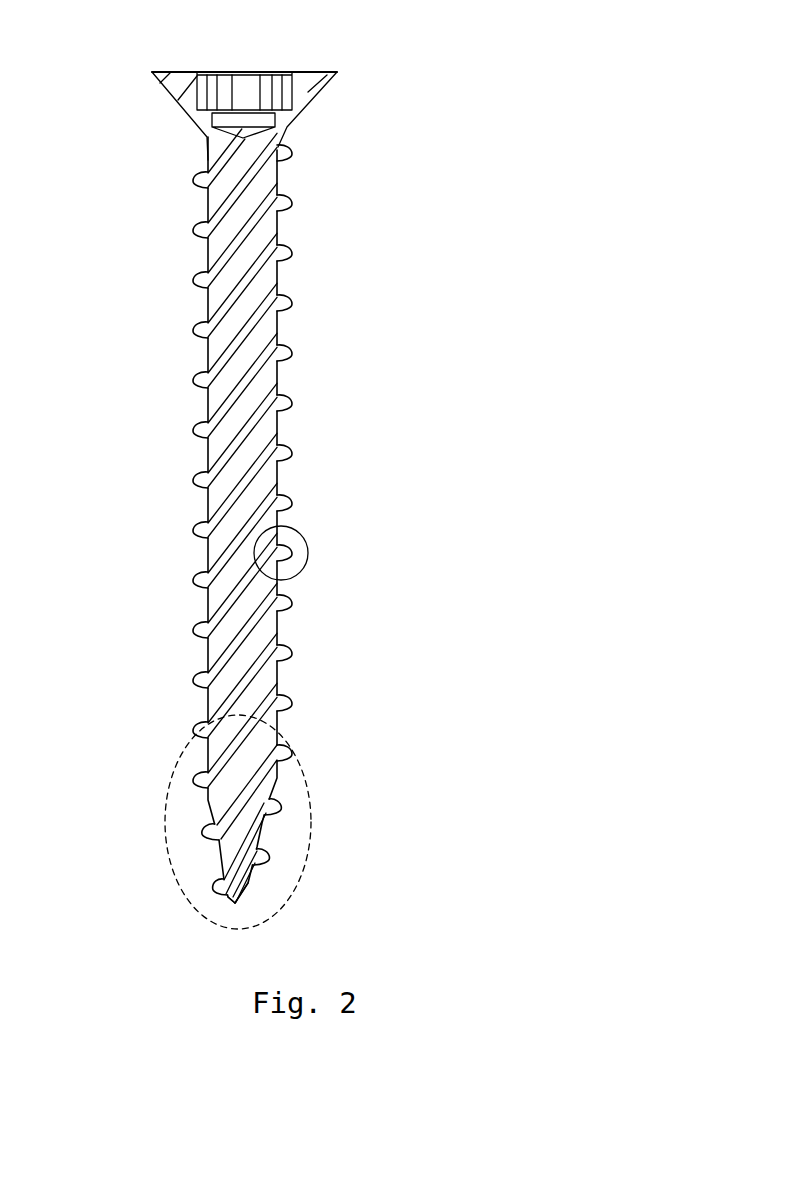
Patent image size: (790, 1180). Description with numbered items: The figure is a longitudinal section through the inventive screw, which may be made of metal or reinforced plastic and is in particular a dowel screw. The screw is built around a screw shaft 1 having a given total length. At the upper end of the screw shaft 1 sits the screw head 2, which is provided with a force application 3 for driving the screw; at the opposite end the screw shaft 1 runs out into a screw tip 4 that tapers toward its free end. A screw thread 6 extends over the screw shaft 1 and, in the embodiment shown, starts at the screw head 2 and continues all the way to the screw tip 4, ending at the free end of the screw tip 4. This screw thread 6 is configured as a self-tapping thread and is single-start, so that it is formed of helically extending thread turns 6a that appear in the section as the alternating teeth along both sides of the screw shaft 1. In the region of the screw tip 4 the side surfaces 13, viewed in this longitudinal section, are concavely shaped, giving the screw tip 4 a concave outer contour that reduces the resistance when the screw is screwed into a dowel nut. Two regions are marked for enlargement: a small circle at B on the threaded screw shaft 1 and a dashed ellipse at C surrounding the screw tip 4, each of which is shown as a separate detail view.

The screw shaft 1 is at (271, 223).
The screw head 2 is at (308, 92).
The force application 3 is at (250, 87).
The screw tip 4 is at (240, 880).
The screw thread 6 is at (193, 379).
The thread turns 6a is at (292, 357).
The side surfaces 13 is at (213, 818).
The detail B is at (306, 544).
The detail C is at (312, 820).